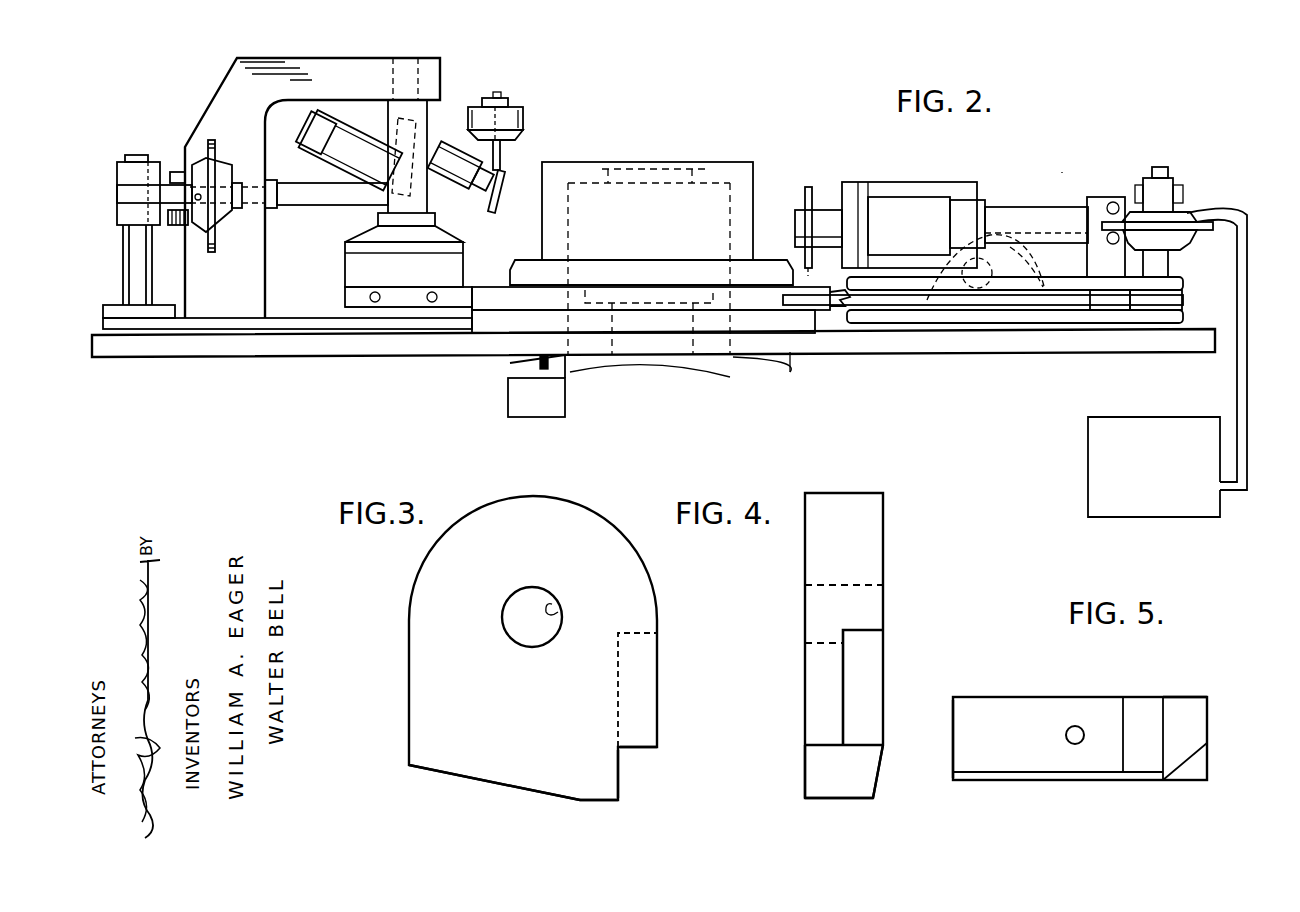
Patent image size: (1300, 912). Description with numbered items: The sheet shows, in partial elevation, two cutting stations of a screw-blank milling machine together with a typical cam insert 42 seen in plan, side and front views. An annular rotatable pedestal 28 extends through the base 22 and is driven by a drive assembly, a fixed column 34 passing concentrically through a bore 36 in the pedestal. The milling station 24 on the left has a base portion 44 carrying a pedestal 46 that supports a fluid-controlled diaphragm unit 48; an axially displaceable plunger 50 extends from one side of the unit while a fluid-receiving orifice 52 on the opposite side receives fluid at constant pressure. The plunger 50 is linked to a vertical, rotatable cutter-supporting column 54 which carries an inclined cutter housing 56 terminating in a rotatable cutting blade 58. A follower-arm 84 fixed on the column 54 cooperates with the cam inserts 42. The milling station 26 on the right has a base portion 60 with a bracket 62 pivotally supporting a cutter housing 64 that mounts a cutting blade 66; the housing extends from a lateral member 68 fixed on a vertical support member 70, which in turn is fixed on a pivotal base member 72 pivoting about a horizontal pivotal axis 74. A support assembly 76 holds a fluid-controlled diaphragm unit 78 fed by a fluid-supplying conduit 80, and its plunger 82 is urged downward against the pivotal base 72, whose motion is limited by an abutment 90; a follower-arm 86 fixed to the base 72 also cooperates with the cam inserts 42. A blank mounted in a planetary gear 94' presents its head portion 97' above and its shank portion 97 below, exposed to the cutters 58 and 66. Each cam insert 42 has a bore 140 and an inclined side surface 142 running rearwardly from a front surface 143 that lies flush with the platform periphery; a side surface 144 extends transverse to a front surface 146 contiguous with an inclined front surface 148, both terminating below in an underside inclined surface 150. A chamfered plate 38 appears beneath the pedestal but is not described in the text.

In FIG. 2, the base 22 is at (240, 348).
In FIG. 2, the milling station 24 is at (178, 120).
In FIG. 2, the milling station 26 is at (1060, 170).
In FIG. 2, the annular rotatable pedestal 28 is at (680, 160).
In FIG. 2, the fixed column 34 is at (668, 366).
In FIG. 2, the bore 36 is at (700, 192).
In FIG. 2, the chamfered plate 38 is at (762, 262).
In FIG. 2, the cam insert 42 is at (490, 302).
In FIG. 3, the cam insert 42 is at (412, 562).
In FIG. 4, the cam insert 42 is at (890, 578).
In FIG. 5, the cam insert 42 is at (1045, 688).
In FIG. 2, the base portion 44 is at (248, 268).
In FIG. 2, the pedestal 46 is at (130, 158).
In FIG. 2, the fluid-controlled diaphragm unit 48 is at (222, 165).
In FIG. 2, the plunger 50 is at (322, 207).
In FIG. 2, the fluid-receiving orifice 52 is at (150, 196).
In FIG. 2, the cutter-supporting column 54 is at (365, 240).
In FIG. 2, the cutter housing 56 is at (455, 150).
In FIG. 2, the cutting blade 58 is at (498, 212).
In FIG. 2, the base portion 60 is at (1112, 318).
In FIG. 2, the bracket 62 is at (1040, 308).
In FIG. 2, the cutter housing 64 is at (888, 205).
In FIG. 2, the cutting blade 66 is at (796, 180).
In FIG. 2, the lateral member 68 is at (1005, 205).
In FIG. 2, the vertical support member 70 is at (1102, 196).
In FIG. 2, the pivotal base member 72 is at (1100, 290).
In FIG. 2, the pivotal axis 74 is at (975, 305).
In FIG. 2, the support assembly 76 is at (1168, 166).
In FIG. 2, the fluid-controlled diaphragm unit 78 is at (1140, 218).
In FIG. 2, the fluid-supplying conduit 80 is at (1237, 376).
In FIG. 2, the plunger 82 is at (1166, 264).
In FIG. 2, the follower-arm 84 is at (455, 300).
In FIG. 2, the follower-arm 86 is at (834, 303).
In FIG. 2, the abutment 90 is at (1165, 300).
In FIG. 2, the planetary gear 94' is at (542, 102).
In FIG. 2, the shank portion 97 is at (533, 149).
In FIG. 2, the head portion 97' is at (524, 68).
In FIG. 3, the bore 140 is at (560, 610).
In FIG. 4, the bore 140 is at (815, 655).
In FIG. 3, the inclined side surface 142 is at (640, 708).
In FIG. 4, the inclined side surface 142 is at (868, 692).
In FIG. 5, the inclined side surface 142 is at (1190, 765).
In FIG. 3, the front surface 143 is at (638, 752).
In FIG. 4, the front surface 143 is at (815, 760).
In FIG. 5, the front surface 143 is at (1190, 720).
In FIG. 3, the side surface 144 is at (622, 782).
In FIG. 4, the side surface 144 is at (828, 790).
In FIG. 3, the front surface 146 is at (595, 802).
In FIG. 4, the front surface 146 is at (800, 800).
In FIG. 5, the front surface 146 is at (1150, 758).
In FIG. 3, the inclined front surface 148 is at (482, 780).
In FIG. 5, the inclined front surface 148 is at (968, 738).
In FIG. 4, the underside inclined surface 150 is at (880, 765).
In FIG. 5, the underside inclined surface 150 is at (1026, 776).